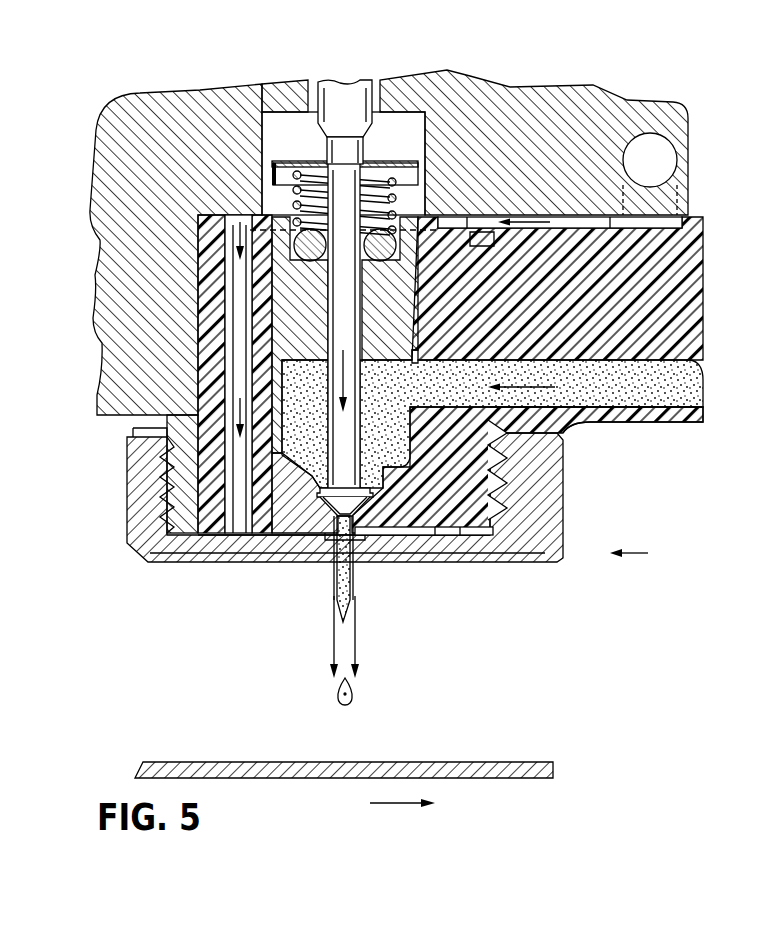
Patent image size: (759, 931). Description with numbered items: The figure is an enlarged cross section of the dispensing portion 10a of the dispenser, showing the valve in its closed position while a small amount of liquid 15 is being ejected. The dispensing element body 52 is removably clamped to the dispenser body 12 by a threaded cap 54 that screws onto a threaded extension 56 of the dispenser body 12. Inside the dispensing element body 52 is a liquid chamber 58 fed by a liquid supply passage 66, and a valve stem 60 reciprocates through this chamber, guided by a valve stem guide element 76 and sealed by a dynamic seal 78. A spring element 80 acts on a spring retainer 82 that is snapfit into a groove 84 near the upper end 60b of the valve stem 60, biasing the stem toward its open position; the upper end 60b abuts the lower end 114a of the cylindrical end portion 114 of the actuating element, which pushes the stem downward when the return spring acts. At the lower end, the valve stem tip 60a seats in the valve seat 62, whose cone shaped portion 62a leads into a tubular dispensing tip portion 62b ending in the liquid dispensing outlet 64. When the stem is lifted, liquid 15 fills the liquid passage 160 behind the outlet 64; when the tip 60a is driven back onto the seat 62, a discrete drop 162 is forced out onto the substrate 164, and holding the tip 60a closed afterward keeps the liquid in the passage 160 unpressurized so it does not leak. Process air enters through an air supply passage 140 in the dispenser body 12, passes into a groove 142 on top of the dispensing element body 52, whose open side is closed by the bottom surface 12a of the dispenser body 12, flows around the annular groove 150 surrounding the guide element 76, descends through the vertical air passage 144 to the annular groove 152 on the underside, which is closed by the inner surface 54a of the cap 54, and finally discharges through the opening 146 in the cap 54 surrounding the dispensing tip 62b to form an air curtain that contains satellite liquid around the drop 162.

The dispensing module 10a is at (650, 553).
The dispenser body 12 is at (527, 86).
The bottom surface of the dispenser body 12a is at (606, 228).
The liquid 15 is at (283, 455).
The dispensing element body 52 is at (632, 420).
The threaded cap 54 is at (560, 537).
The inner surface of the cap 54a is at (235, 548).
The threaded extension 56 is at (512, 484).
The liquid chamber 58 is at (300, 392).
The valve stem 60 is at (356, 296).
The valve stem tip 60a is at (308, 522).
The end of the valve stem 60b is at (400, 163).
The valve seat 62 is at (510, 520).
The cone shaped portion 62a is at (368, 514).
The tubular dispensing tip portion 62b is at (330, 545).
The liquid dispensing outlet 64 is at (346, 606).
The liquid supply passage 66 is at (698, 378).
The valve stem guide element 76 is at (290, 300).
The dynamic seal 78 is at (268, 216).
The spring element 80 is at (272, 166).
The spring retainer 82 is at (264, 126).
The groove 84 is at (276, 84).
The cylindrical end portion 114 is at (347, 100).
The lower end of the actuating element 114a is at (365, 138).
The air supply passage 140 is at (646, 155).
The groove 142 is at (480, 240).
The air passage 144 is at (238, 328).
The opening 146 is at (351, 548).
The annular groove 150 is at (452, 222).
The annular groove 152 is at (460, 537).
The liquid passage 160 is at (349, 585).
The drop 162 is at (354, 693).
The substrate 164 is at (480, 762).